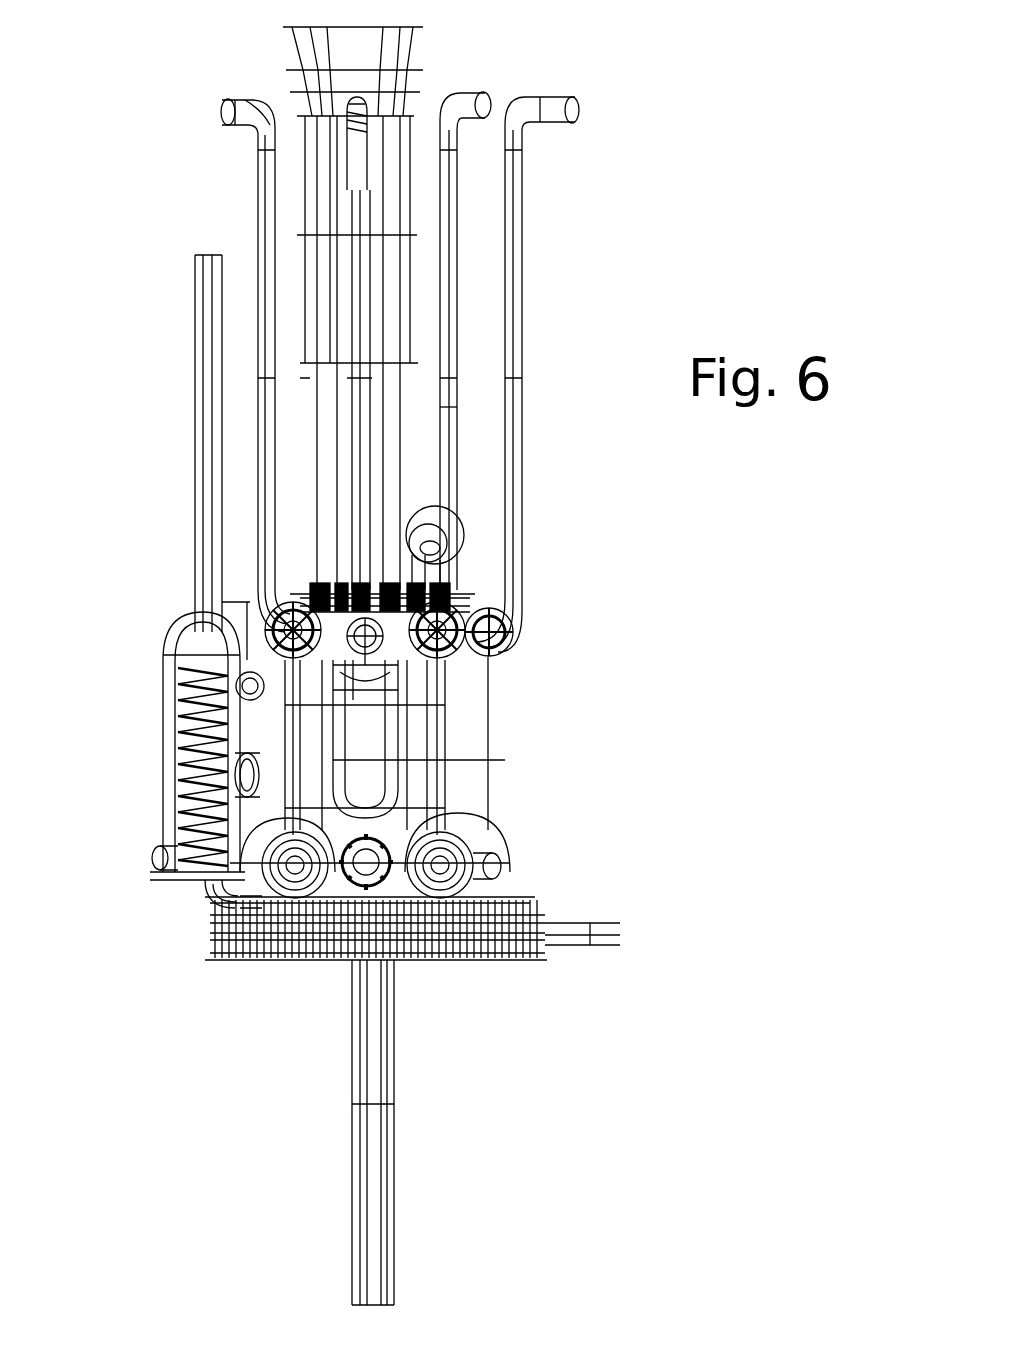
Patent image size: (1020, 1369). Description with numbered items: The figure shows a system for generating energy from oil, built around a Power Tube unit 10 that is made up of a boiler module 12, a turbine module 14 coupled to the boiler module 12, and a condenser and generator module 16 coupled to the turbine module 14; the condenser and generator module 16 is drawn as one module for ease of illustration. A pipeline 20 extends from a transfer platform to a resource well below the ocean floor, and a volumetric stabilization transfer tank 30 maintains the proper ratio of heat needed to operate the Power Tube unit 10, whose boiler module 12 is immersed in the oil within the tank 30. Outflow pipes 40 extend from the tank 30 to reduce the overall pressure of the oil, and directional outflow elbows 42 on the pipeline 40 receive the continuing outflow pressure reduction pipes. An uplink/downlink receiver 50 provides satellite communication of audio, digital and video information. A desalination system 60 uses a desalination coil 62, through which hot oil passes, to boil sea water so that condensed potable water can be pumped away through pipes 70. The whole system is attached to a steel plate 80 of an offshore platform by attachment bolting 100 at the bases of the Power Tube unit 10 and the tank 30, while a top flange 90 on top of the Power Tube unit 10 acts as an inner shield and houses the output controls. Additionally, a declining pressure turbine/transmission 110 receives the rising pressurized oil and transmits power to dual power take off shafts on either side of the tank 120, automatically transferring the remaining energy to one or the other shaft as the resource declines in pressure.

The Power Tube unit 10 is at (413, 407).
The boiler module 12 is at (365, 739).
The turbine module 14 is at (350, 390).
The condenser and generator module 16 is at (357, 230).
The pipeline 20 is at (409, 1132).
The volumetric stabilization transfer tank 30 is at (487, 718).
The outflow pipes 40 is at (503, 137).
The directional outflow elbows 42 is at (580, 107).
The uplink/downlink receiver 50 is at (437, 552).
The desalination system 60 is at (168, 690).
The desalination coil 62 is at (168, 752).
The pipes 70 is at (190, 356).
The steel plate 80 is at (630, 935).
The top flange 90 is at (428, 38).
The attachment bolting 100 is at (530, 900).
The declining pressure turbine/transmission 110 is at (273, 887).
The tank 120 is at (500, 860).